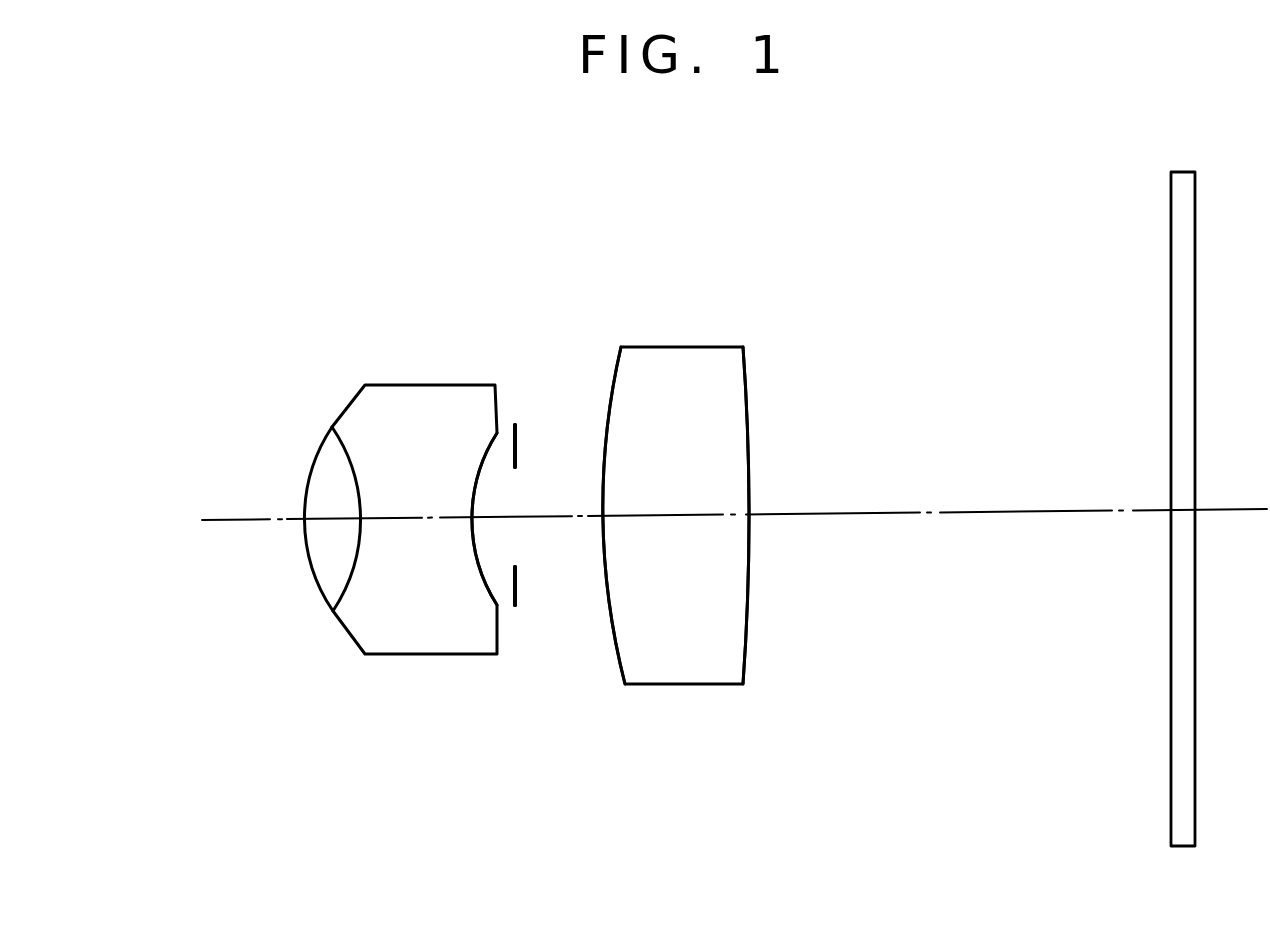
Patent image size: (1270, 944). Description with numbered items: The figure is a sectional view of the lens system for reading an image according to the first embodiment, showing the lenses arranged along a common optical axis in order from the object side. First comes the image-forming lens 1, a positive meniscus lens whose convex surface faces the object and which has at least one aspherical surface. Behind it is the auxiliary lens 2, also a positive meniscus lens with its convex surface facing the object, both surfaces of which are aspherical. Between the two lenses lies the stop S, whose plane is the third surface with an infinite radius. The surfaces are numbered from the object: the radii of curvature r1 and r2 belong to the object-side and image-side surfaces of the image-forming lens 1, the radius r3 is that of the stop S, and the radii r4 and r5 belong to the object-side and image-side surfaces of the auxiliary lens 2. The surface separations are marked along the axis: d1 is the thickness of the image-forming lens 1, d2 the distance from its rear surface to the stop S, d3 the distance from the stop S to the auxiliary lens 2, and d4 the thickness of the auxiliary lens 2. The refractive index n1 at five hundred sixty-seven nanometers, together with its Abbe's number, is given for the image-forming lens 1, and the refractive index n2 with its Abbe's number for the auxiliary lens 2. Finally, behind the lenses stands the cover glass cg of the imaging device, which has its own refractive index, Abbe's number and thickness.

The image-forming lens 1 is at (413, 402).
The auxiliary lens 2 is at (680, 367).
The radius of curvature of the first surface r1 is at (332, 427).
The radius of curvature of the second surface r2 is at (483, 455).
The radius of curvature of the third surface r3 is at (517, 443).
The radius of curvature of the fourth surface r4 is at (613, 387).
The radius of curvature of the fifth surface r5 is at (748, 392).
The first surface separation d1 is at (395, 519).
The second surface separation d2 is at (493, 518).
The third surface separation d3 is at (562, 517).
The fourth surface separation d4 is at (682, 516).
The refractive index of the first lens n1 is at (386, 449).
The refractive index of the second lens n2 is at (674, 446).
The stop S is at (517, 592).
The cover glass cg is at (1177, 703).